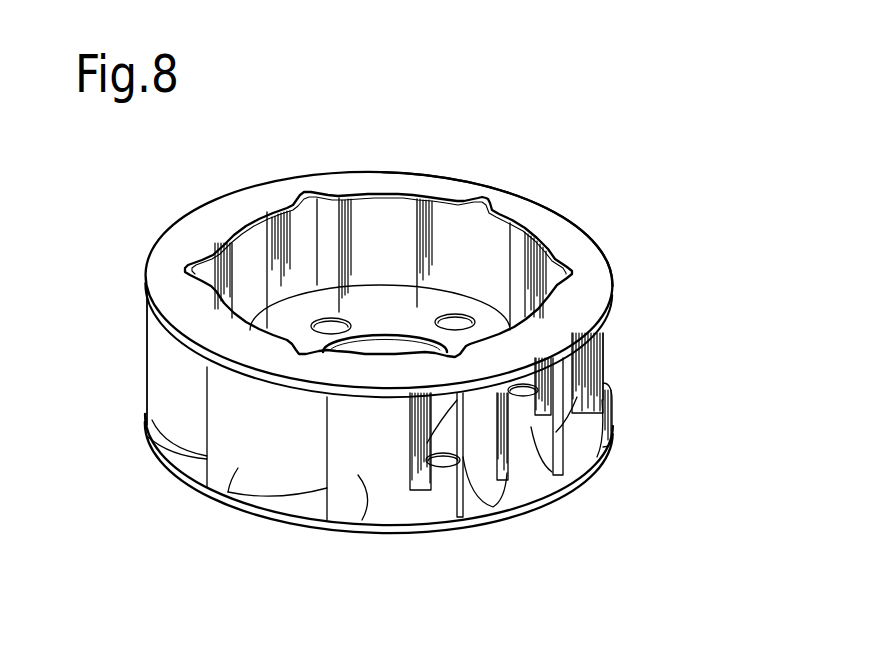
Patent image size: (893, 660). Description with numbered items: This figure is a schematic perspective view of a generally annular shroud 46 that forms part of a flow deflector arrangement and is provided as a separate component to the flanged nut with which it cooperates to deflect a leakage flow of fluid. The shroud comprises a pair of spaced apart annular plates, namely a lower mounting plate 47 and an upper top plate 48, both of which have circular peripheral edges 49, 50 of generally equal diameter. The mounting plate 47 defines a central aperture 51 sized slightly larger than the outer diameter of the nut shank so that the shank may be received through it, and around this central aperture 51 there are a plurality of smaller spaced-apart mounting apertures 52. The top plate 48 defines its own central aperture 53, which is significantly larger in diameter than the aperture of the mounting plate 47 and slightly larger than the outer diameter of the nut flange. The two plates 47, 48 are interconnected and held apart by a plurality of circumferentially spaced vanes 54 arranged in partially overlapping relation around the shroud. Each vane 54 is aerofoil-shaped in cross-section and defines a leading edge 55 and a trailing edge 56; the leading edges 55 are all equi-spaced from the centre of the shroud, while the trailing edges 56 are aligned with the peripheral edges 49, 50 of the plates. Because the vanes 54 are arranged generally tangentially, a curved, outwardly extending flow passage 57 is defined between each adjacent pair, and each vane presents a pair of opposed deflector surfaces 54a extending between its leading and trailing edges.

The shroud 46 is at (652, 251).
The mounting plate 47 is at (530, 477).
The top plate 48 is at (567, 230).
The peripheral edge 49 is at (600, 458).
The peripheral edge 50 is at (612, 284).
The central aperture 51 is at (361, 348).
The mounting apertures 52 is at (463, 335).
The central aperture 53 is at (375, 201).
The vanes 54 is at (213, 499).
The deflector surfaces 54a is at (340, 428).
The leading edges 55 is at (338, 243).
The trailing edges 56 is at (212, 412).
The flow passage 57 is at (528, 430).